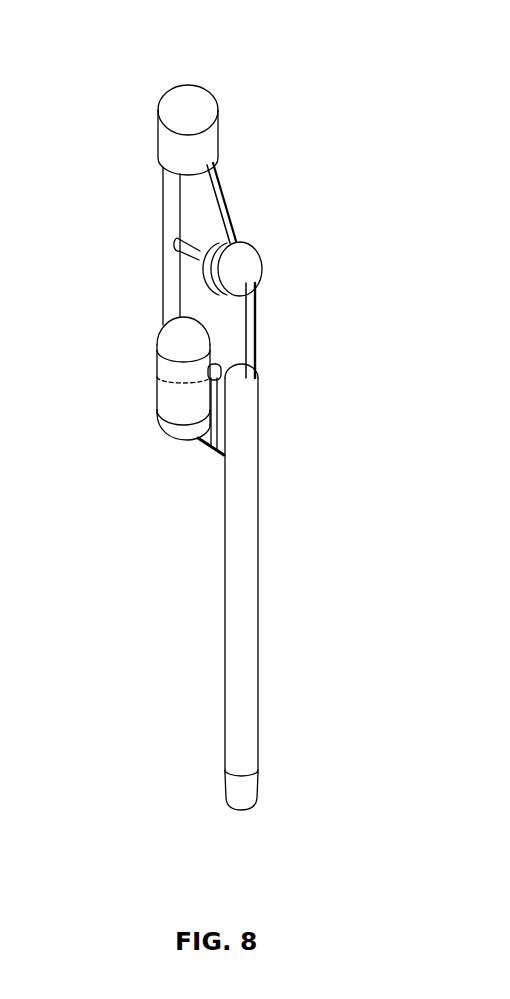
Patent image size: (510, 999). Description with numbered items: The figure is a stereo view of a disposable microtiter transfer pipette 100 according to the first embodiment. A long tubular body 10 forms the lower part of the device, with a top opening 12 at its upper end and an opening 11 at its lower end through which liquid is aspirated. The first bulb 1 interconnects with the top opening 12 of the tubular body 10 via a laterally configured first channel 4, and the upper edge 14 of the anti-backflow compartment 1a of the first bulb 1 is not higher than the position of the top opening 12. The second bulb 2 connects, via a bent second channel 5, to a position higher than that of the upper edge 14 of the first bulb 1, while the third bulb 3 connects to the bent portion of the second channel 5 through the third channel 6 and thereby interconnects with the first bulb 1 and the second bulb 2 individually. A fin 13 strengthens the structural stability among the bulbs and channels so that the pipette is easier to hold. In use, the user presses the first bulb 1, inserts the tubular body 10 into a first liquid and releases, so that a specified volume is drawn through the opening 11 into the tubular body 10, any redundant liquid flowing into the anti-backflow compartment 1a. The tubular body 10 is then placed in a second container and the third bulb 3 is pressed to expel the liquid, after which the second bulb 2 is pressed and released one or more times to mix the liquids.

The disposable microtiter transfer pipette 100 is at (178, 77).
The third bulb 3 is at (200, 140).
The third channel 6 is at (167, 205).
The second channel 5 is at (167, 288).
The first bulb 1 is at (157, 360).
The upper edge 14 is at (170, 383).
The anti-backflow compartment 1a is at (160, 415).
The first channel 4 is at (222, 455).
The second bulb 2 is at (248, 262).
The fin 13 is at (205, 217).
The tubular body 10 is at (250, 572).
The top opening 12 is at (257, 380).
The opening 11 is at (242, 815).